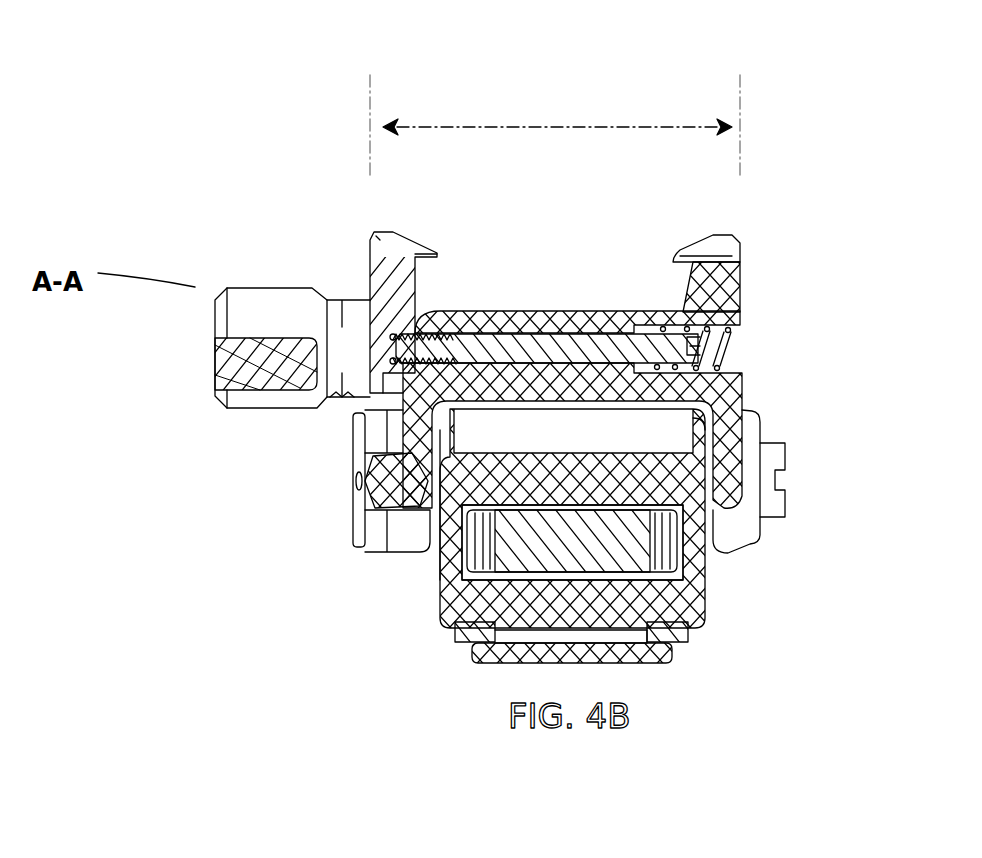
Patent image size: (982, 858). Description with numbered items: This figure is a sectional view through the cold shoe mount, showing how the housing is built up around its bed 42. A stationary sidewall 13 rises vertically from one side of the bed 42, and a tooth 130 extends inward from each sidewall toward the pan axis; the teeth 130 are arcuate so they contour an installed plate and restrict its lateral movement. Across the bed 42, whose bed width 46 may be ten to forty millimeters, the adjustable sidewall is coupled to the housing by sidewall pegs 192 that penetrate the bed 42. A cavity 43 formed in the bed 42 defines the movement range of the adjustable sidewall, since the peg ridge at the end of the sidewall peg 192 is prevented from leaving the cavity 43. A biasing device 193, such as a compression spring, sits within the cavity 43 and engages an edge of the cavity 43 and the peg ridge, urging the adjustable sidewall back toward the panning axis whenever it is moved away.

The stationary sidewall 13 is at (397, 278).
The bed 42 is at (553, 315).
The cavity 43 is at (655, 323).
The bed width 46 is at (490, 122).
The tooth 130 is at (370, 247).
The sidewall peg 192 is at (365, 400).
The biasing device 193 is at (737, 338).